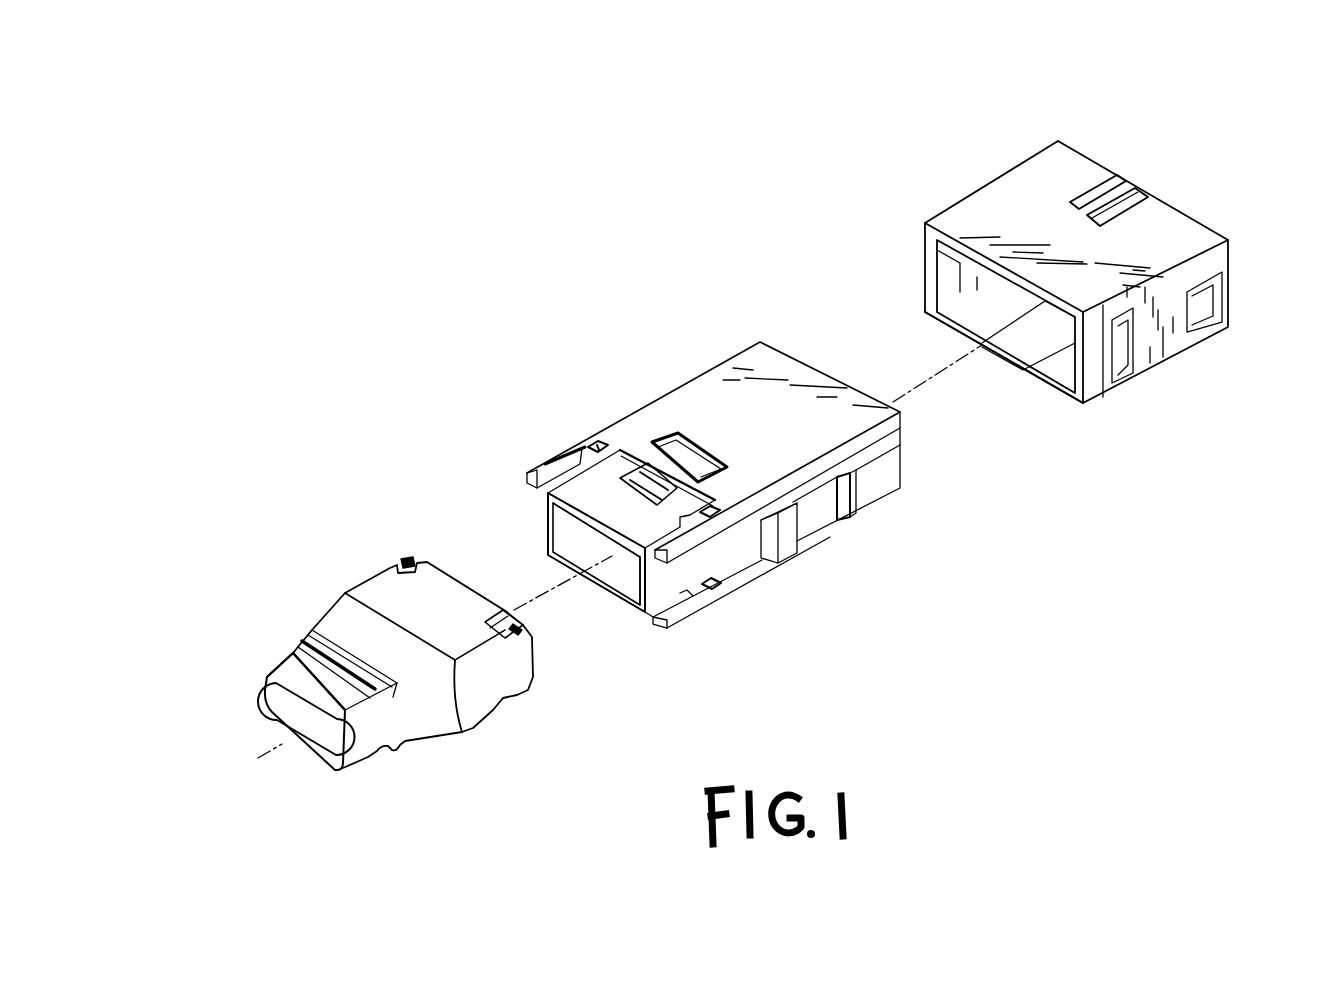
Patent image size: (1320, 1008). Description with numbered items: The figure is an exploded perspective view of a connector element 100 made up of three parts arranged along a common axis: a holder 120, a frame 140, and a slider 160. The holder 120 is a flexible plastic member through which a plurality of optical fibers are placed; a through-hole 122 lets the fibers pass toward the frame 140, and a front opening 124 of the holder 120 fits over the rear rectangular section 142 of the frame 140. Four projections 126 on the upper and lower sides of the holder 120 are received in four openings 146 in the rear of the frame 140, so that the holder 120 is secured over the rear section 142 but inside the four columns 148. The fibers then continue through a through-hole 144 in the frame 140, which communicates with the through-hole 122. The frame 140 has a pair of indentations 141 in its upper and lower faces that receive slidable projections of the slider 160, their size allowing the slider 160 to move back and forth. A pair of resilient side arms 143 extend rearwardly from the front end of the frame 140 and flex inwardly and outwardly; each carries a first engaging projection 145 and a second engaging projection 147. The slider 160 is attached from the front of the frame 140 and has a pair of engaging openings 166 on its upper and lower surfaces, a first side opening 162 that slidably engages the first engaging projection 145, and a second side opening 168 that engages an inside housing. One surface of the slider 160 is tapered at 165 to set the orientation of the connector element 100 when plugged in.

The connector element 100 is at (505, 304).
The holder 120 is at (390, 775).
The through-hole 122 is at (300, 735).
The front opening 124 is at (480, 592).
The projections 126 is at (408, 558).
The frame 140 is at (897, 560).
The indentations 141 is at (692, 457).
The rear rectangular section 142 is at (655, 577).
The resilient side arms 143 is at (793, 502).
The through-hole 144 is at (623, 578).
The first engaging projection 145 is at (787, 537).
The openings 146 is at (611, 445).
The second engaging projection 147 is at (860, 505).
The columns 148 is at (545, 470).
The slider 160 is at (936, 205).
The first side opening 162 is at (1214, 302).
The tapered surface 165 is at (930, 320).
The engaging openings 166 is at (1125, 197).
The second side opening 168 is at (1130, 362).